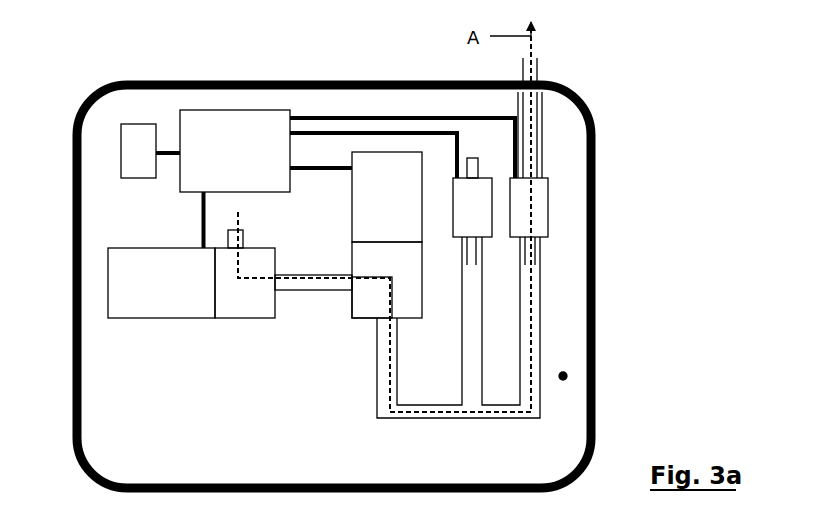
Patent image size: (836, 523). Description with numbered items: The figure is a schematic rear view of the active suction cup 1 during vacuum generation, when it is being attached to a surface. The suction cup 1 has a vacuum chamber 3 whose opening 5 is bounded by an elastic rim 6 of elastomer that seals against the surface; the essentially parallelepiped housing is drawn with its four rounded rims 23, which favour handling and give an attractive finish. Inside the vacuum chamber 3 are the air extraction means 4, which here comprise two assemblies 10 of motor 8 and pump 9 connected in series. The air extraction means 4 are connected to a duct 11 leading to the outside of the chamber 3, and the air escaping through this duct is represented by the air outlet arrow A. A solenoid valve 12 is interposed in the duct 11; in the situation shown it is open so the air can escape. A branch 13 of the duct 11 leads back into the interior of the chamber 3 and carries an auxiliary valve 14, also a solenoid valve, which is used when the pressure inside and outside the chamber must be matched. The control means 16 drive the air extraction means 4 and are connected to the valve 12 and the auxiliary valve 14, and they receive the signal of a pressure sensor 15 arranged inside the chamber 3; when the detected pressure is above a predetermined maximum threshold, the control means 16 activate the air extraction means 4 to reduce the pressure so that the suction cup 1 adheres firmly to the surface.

The active suction cup 1 is at (622, 106).
The vacuum chamber 3 is at (128, 439).
The air extraction means 4 is at (350, 332).
The opening 5 is at (567, 378).
The elastic rim 6 is at (597, 279).
The motor 8 is at (156, 280).
The pump 9 is at (241, 307).
The assembly of motor and pump 10 is at (204, 318).
The duct 11 is at (541, 296).
The solenoid valve 12 is at (538, 196).
The branch 13 is at (472, 336).
The auxiliary valve 14 is at (484, 222).
The pressure sensor 15 is at (143, 143).
The control means 16 is at (335, 179).
The rounded rims 23 is at (99, 80).